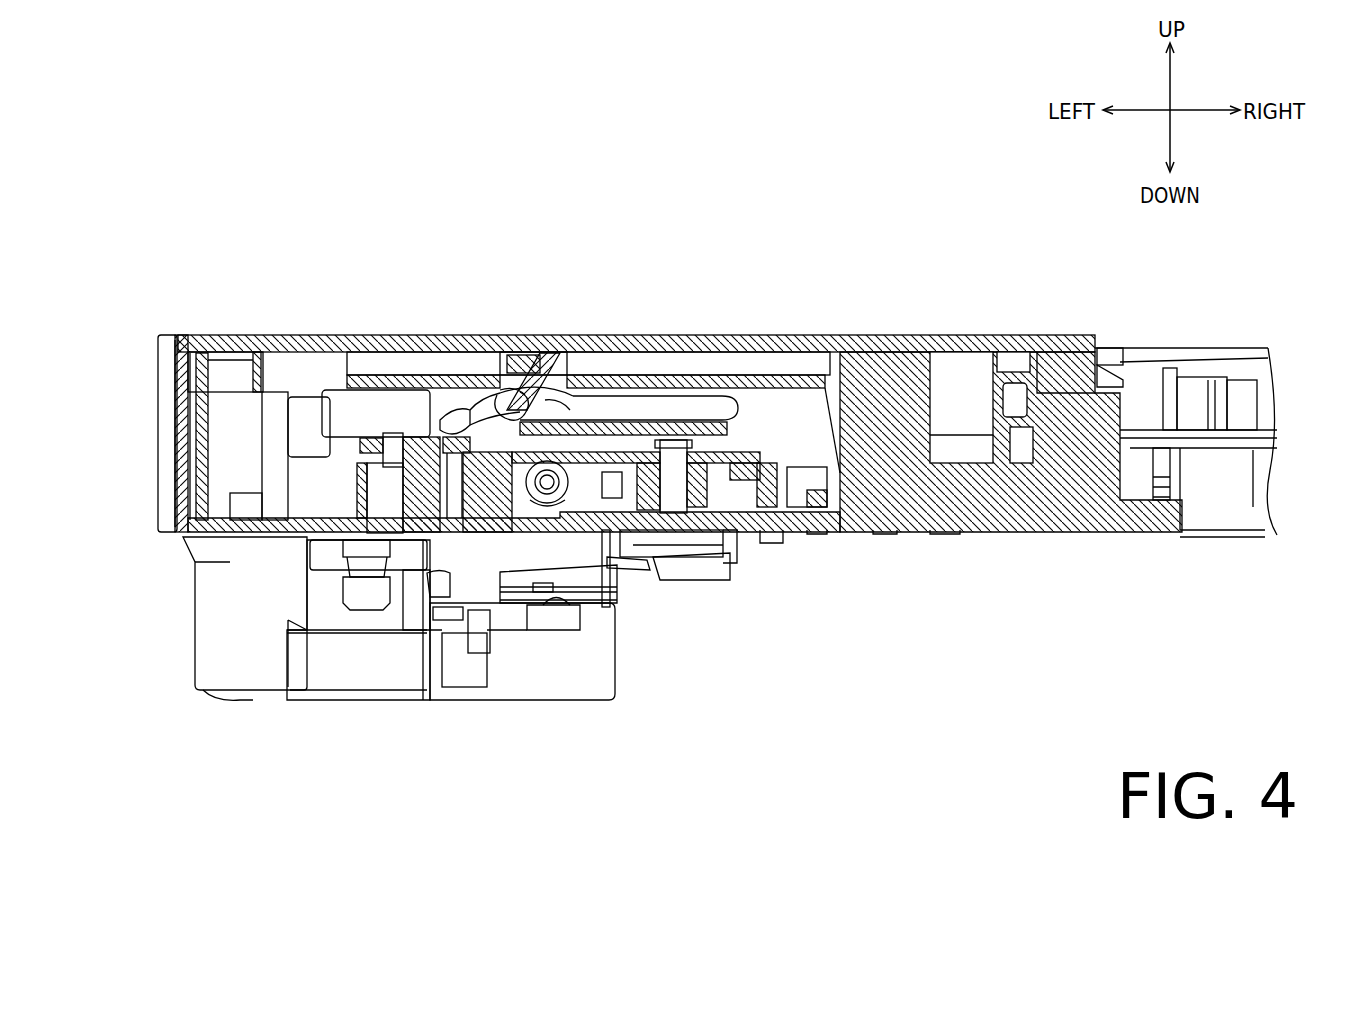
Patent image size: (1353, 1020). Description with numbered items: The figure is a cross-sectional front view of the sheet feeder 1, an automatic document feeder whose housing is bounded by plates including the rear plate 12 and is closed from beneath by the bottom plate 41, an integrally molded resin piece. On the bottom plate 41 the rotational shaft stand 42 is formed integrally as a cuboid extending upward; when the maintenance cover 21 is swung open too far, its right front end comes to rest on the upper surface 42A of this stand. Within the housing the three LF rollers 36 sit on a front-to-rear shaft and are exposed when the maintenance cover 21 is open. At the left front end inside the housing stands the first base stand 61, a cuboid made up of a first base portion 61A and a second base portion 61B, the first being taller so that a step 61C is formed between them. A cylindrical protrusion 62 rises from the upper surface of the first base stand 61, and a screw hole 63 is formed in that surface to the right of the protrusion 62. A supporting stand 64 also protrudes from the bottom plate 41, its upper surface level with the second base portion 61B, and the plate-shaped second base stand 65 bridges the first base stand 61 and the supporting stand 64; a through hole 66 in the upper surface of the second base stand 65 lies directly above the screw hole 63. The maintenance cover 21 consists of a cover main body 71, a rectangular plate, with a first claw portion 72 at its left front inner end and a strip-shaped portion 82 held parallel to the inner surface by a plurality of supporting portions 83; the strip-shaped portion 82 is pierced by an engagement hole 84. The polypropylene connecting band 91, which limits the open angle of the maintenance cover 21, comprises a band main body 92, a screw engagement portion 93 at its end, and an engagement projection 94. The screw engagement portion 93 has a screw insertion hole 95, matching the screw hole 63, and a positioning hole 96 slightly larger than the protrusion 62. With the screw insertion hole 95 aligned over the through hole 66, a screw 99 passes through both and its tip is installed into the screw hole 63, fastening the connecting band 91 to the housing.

The sheet feeder 1 is at (713, 780).
The rear plate 12 is at (160, 455).
The maintenance cover 21 is at (872, 333).
The LF roller 36 is at (610, 553).
The bottom plate 41 is at (287, 533).
The rotational shaft stand 42 is at (1083, 447).
The upper surface of rotational shaft stand 42A is at (1043, 350).
The first base stand 61 is at (417, 467).
The first base portion 61A is at (257, 528).
The second base portion 61B is at (405, 478).
The step 61C is at (360, 446).
The protrusion 62 is at (307, 390).
The screw hole 63 is at (445, 455).
The supporting stand 64 is at (743, 530).
The second base stand 65 is at (793, 530).
The through hole 66 is at (503, 520).
The cover main body 71 is at (838, 352).
The first claw portion 72 is at (1115, 352).
The strip-shaped portion 82 is at (700, 375).
The supporting portion 83 is at (485, 395).
The engagement hole 84 is at (527, 360).
The connecting band 91 is at (752, 421).
The band main body 92 is at (752, 400).
The screw engagement portion 93 is at (410, 452).
The engagement projection 94 is at (523, 407).
The screw insertion hole 95 is at (407, 478).
The positioning hole 96 is at (363, 460).
The screw 99 is at (455, 442).